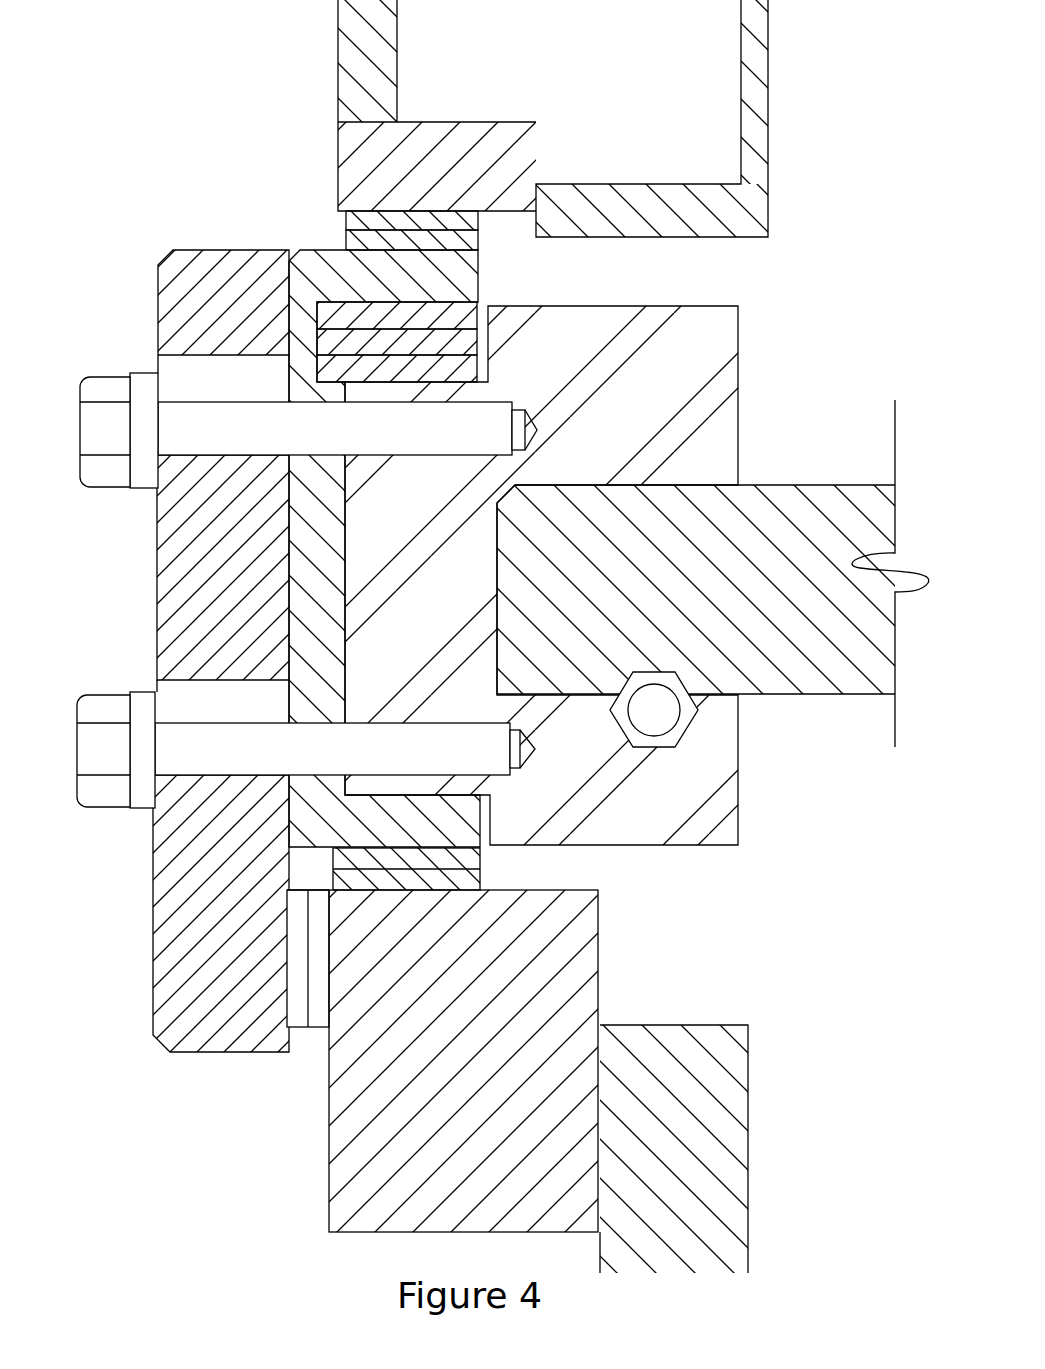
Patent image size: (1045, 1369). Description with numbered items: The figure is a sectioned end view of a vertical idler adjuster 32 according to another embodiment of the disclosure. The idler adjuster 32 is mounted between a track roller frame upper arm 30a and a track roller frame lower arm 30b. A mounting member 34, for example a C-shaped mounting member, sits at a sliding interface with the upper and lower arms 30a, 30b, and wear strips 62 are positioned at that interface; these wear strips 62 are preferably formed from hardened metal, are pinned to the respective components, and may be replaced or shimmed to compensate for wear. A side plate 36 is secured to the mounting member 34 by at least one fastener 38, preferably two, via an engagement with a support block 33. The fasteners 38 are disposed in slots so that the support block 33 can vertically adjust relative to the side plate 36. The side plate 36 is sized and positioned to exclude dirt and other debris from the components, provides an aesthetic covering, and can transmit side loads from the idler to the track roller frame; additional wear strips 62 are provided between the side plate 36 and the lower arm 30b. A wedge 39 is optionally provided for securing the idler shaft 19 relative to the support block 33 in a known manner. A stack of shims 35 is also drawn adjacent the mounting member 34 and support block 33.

The idler shaft 19 is at (803, 547).
The track roller frame upper arm 30a is at (747, 198).
The track roller frame lower arm 30b is at (732, 1098).
The idler adjuster 32 is at (167, 651).
The support block 33 is at (690, 368).
The mounting member 34 is at (320, 272).
The adjustment shim stack 35 is at (492, 342).
The side plate 36 is at (203, 590).
The fastener 38 is at (207, 422).
The wedge 39 is at (665, 720).
The wear strips 62 is at (323, 230).